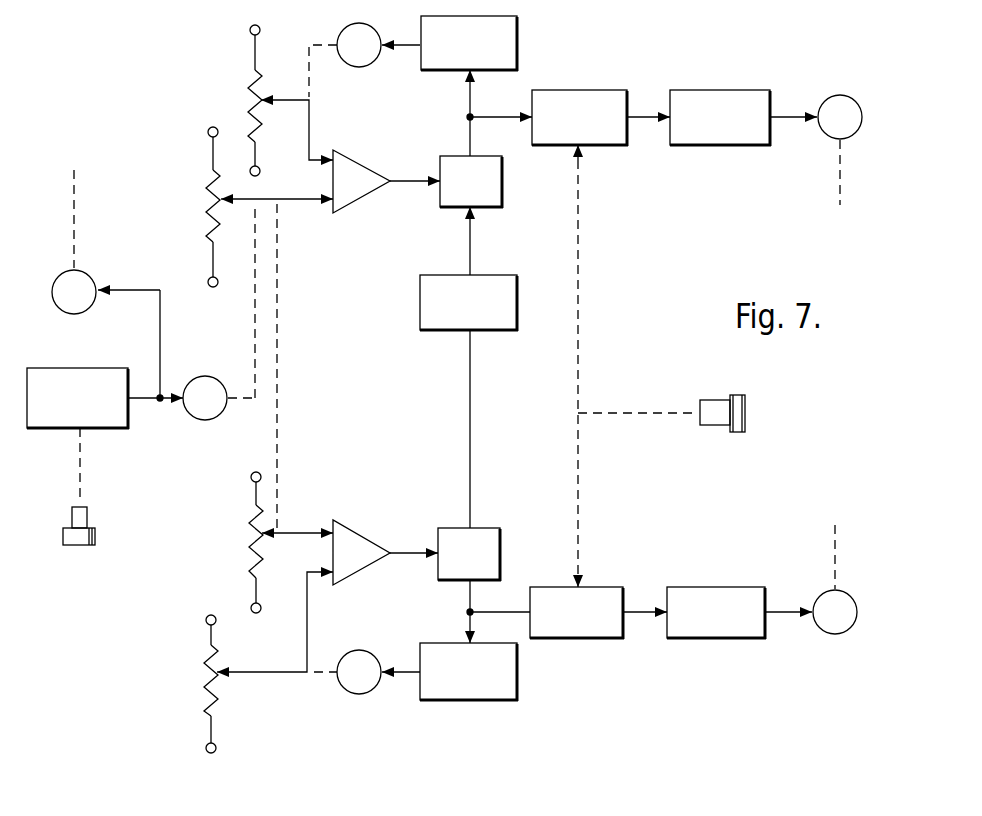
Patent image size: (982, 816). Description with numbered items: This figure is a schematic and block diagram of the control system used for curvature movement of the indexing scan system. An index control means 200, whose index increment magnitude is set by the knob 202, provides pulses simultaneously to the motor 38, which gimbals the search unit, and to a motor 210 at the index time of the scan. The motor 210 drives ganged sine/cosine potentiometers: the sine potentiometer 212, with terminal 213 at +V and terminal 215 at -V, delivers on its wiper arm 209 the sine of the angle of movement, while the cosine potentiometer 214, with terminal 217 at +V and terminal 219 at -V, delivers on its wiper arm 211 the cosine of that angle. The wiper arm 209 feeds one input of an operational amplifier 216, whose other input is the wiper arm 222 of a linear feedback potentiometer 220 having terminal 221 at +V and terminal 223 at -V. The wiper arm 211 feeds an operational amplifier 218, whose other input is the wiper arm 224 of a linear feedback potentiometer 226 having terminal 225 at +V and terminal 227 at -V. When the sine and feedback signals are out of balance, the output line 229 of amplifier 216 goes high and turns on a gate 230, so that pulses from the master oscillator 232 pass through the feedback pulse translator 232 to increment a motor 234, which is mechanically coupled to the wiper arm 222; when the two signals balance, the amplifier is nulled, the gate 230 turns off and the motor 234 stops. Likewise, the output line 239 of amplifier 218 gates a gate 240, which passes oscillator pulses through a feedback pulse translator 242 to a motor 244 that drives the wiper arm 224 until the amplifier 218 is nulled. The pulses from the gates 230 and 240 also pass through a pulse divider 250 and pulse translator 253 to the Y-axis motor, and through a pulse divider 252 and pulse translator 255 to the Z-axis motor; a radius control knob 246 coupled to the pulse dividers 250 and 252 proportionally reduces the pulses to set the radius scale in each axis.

The motor 38 is at (85, 275).
The index control means 200 is at (128, 430).
The knob 202 is at (94, 545).
The wiper arm 209 is at (225, 206).
The motor 210 is at (215, 420).
The wiper arm 211 is at (270, 530).
The sine potentiometer 212 is at (200, 190).
The terminal 213 is at (207, 132).
The cosine potentiometer 214 is at (248, 538).
The terminal 215 is at (208, 278).
The operational amplifier 216 is at (366, 192).
The terminal 217 is at (261, 477).
The operational amplifier 218 is at (356, 535).
The terminal 219 is at (252, 605).
The linear feedback potentiometer 220 is at (246, 84).
The terminal 221 is at (250, 32).
The wiper arm 222 is at (268, 106).
The terminal 223 is at (252, 174).
The wiper arm 224 is at (270, 673).
The terminal 225 is at (217, 623).
The linear feedback potentiometer 226 is at (205, 653).
The terminal 227 is at (217, 750).
The output line 229 is at (402, 184).
The gate 230 is at (498, 203).
The master oscillator / feedback pulse translator 232 is at (518, 36).
The motor 234 is at (365, 67).
The output line 239 is at (405, 550).
The gate 240 is at (500, 530).
The feedback pulse translator 242 is at (422, 696).
The motor 244 is at (357, 692).
The radius control knob 246 is at (743, 432).
The pulse divider circuit 250 is at (613, 90).
The pulse divider 252 is at (616, 634).
The pulse translator 253 is at (704, 90).
The pulse translator 255 is at (742, 630).